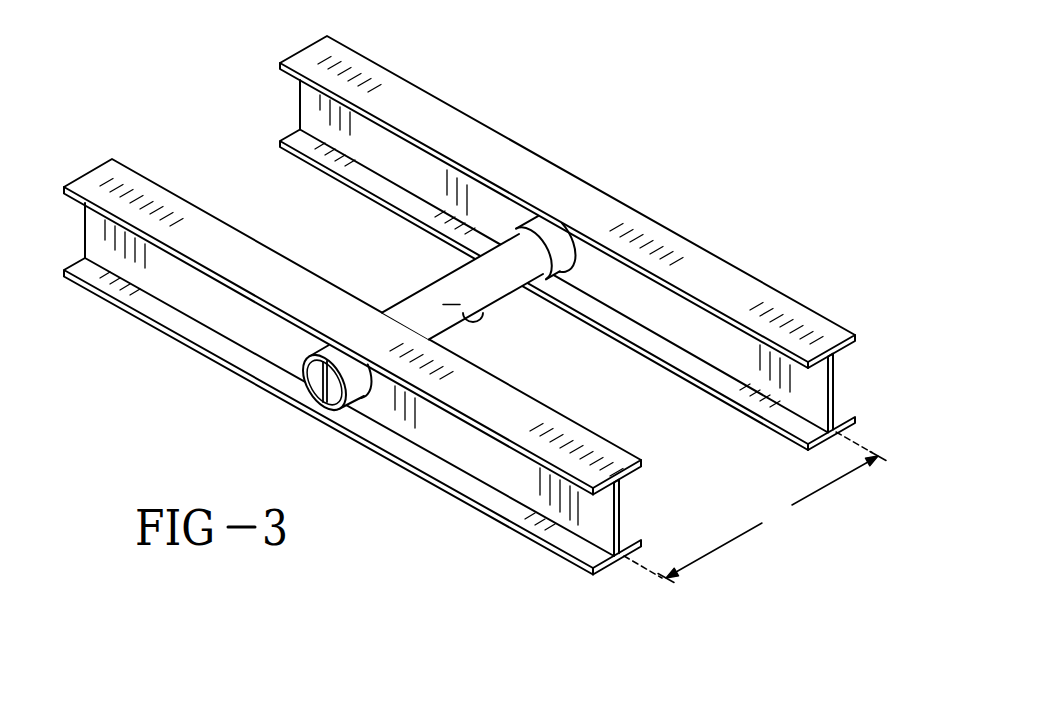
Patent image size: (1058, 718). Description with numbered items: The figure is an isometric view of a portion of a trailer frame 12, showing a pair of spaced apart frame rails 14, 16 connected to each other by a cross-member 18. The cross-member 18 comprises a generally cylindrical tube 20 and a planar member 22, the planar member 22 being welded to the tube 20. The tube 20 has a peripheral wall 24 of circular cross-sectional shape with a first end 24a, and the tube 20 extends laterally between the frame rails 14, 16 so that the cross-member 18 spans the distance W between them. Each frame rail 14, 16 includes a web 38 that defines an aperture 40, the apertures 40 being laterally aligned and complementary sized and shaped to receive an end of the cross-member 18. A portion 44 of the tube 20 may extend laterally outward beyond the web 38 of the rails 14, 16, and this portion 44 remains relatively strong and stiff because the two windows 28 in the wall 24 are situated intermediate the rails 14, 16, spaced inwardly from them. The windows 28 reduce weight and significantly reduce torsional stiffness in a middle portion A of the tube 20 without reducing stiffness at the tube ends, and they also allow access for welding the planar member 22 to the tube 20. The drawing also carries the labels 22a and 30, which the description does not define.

The trailer frame 12 is at (567, 243).
The frame rail 14 is at (158, 333).
The frame rail 16 is at (358, 200).
The cross-member 18 is at (433, 321).
The tube 20 is at (451, 270).
The planar member 22 is at (527, 292).
The sleeve 22a is at (308, 392).
The peripheral wall 24 is at (553, 242).
The first end 24a is at (316, 414).
The window 28 is at (466, 316).
The tube underside 30 is at (495, 300).
The web 38 is at (693, 330).
The aperture 40 is at (487, 331).
The portion 44 is at (312, 345).
The middle portion A is at (451, 293).
The distance W is at (755, 507).